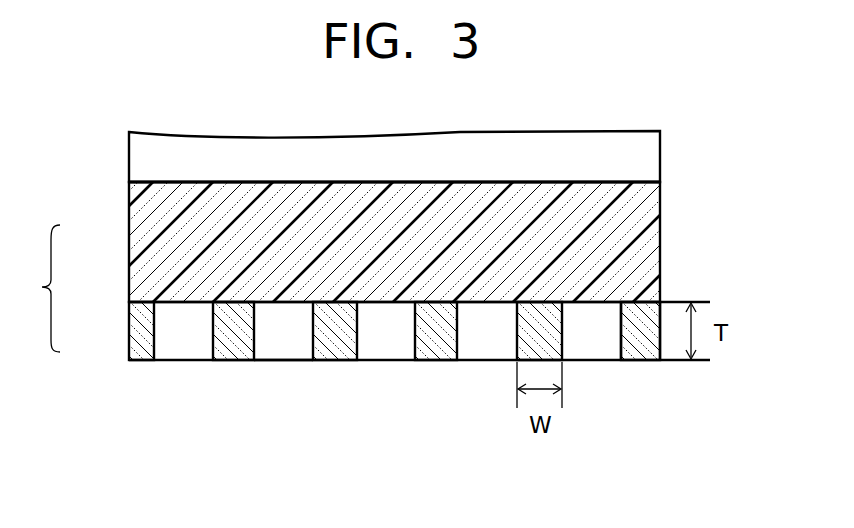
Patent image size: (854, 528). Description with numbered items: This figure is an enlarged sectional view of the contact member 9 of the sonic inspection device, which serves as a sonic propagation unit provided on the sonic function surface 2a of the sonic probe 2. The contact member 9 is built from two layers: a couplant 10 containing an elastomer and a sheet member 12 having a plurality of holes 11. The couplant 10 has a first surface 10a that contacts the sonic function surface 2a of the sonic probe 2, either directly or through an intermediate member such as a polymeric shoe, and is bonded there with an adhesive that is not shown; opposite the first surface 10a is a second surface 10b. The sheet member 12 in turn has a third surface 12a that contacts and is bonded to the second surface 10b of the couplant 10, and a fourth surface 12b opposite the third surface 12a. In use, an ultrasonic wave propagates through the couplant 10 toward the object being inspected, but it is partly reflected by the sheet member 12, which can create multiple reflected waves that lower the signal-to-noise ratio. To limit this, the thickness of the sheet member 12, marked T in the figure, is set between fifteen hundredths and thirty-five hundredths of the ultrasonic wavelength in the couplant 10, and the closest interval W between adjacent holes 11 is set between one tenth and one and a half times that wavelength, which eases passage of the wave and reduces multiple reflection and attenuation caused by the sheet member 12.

The sonic probe 2 is at (129, 163).
The sonic function surface 2a is at (648, 181).
The contact member 9 is at (40, 288).
The couplant 10 is at (129, 243).
The first surface 10a is at (643, 188).
The second surface 10b is at (625, 301).
The holes 11 is at (285, 348).
The sheet member 12 is at (129, 336).
The third surface 12a is at (640, 305).
The fourth surface 12b is at (626, 308).